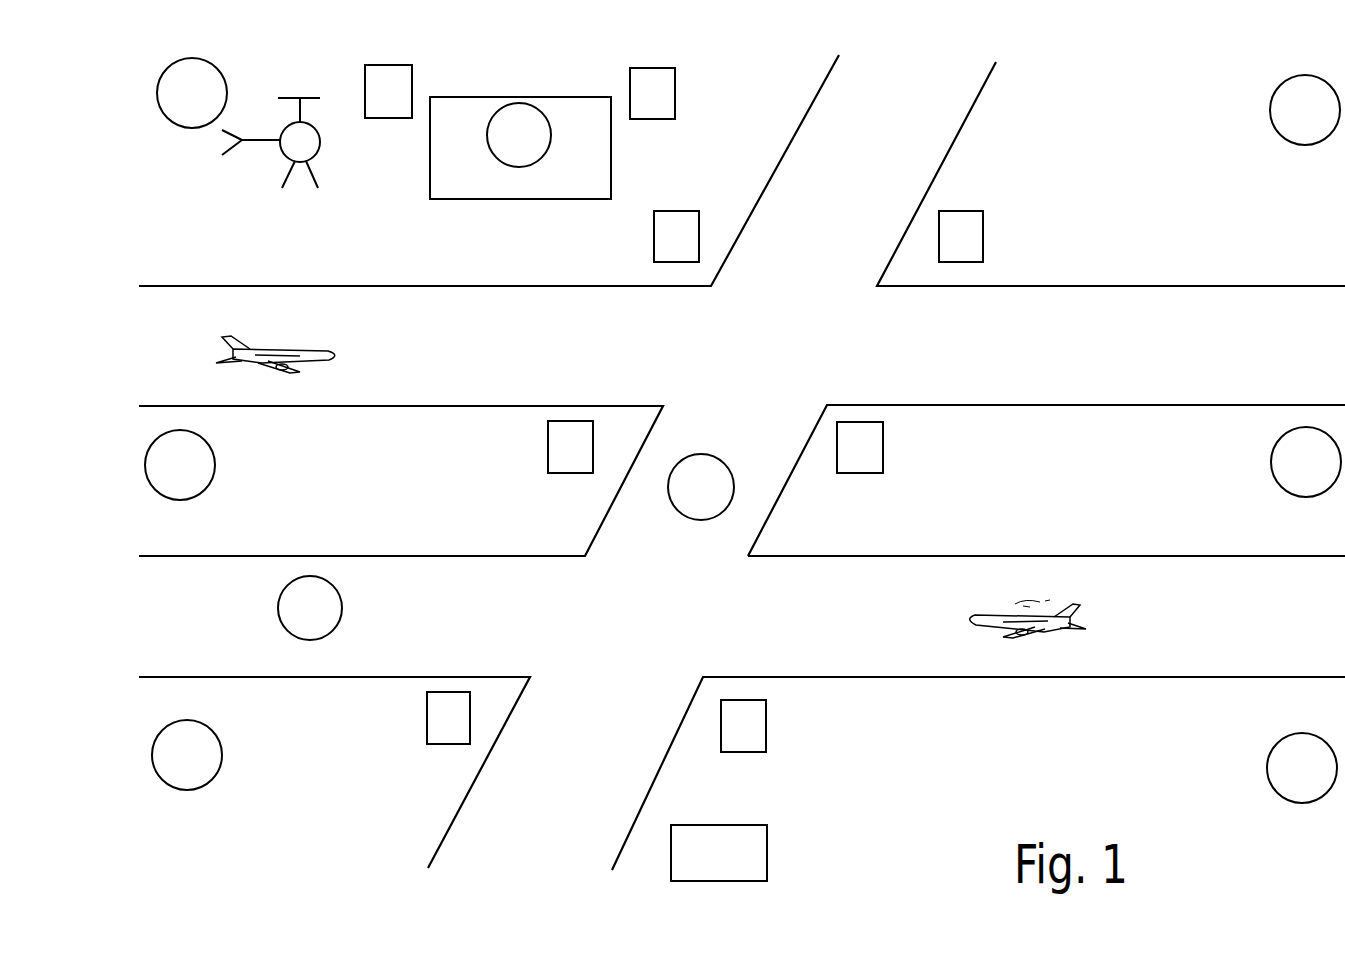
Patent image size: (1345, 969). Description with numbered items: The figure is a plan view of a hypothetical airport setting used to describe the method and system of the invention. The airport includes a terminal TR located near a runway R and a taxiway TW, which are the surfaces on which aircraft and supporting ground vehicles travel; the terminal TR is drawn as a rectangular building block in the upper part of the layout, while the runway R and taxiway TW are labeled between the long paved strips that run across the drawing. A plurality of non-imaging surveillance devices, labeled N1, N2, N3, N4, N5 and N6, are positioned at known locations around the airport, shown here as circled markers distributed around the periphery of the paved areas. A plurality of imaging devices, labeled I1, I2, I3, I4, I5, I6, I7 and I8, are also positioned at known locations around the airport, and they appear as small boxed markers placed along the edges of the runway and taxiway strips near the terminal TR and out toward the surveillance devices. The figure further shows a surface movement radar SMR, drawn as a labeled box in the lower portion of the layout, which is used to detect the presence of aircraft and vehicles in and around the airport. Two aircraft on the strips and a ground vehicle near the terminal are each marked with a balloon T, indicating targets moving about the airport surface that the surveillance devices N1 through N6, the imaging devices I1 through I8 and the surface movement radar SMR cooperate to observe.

The non-imaging surveillance device N1 is at (1305, 110).
The non-imaging surveillance device N2 is at (1306, 462).
The non-imaging surveillance device N3 is at (1302, 768).
The non-imaging surveillance device N4 is at (187, 755).
The non-imaging surveillance device N5 is at (180, 465).
The non-imaging surveillance device N6 is at (192, 93).
The imaging device I1 is at (676, 236).
The imaging device I2 is at (570, 447).
The imaging device I3 is at (961, 236).
The imaging device I4 is at (860, 447).
The imaging device I5 is at (743, 726).
The imaging device I6 is at (652, 93).
The imaging device I7 is at (388, 91).
The imaging device I8 is at (448, 718).
The transponder (target/vehicle) T is at (280, 334).
The terminal TR is at (520, 148).
The taxiway TW is at (701, 487).
The runway R is at (310, 608).
The surface movement radar SMR is at (719, 853).